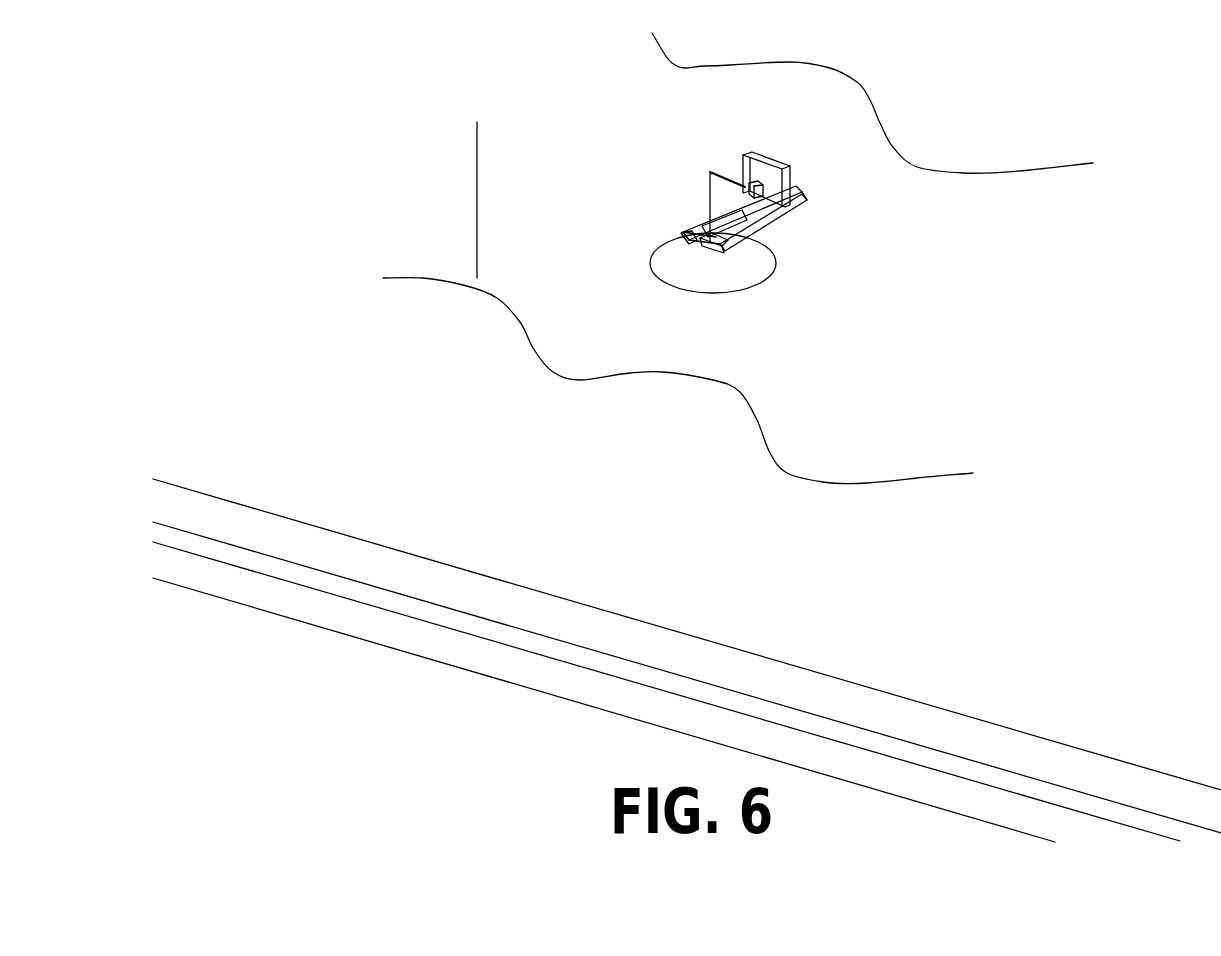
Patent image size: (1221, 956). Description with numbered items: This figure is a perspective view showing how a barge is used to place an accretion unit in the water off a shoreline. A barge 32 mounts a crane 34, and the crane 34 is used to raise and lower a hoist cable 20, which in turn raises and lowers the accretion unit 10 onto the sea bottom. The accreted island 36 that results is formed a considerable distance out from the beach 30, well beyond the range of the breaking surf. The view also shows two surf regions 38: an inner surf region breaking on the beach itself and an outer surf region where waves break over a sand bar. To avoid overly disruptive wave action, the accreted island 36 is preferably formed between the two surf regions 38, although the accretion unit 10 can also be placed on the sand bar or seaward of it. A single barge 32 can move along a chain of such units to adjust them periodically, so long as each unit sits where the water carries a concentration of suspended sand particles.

The accretion unit 10 is at (707, 237).
The hoist cable 20 is at (709, 191).
The beach 30 is at (437, 575).
The barge 32 is at (757, 213).
The crane 34 is at (790, 170).
The accreted island 36 is at (753, 277).
The surf regions 38 is at (648, 50).